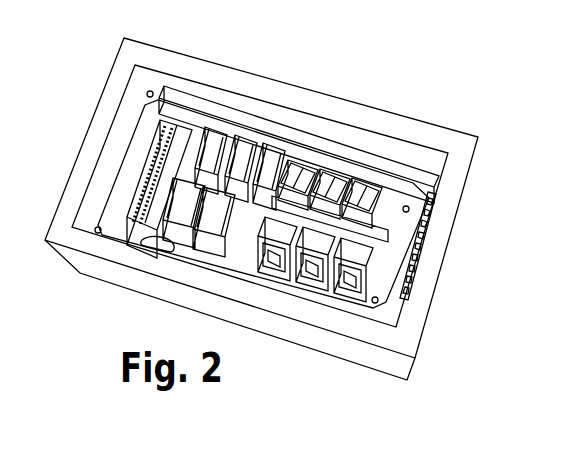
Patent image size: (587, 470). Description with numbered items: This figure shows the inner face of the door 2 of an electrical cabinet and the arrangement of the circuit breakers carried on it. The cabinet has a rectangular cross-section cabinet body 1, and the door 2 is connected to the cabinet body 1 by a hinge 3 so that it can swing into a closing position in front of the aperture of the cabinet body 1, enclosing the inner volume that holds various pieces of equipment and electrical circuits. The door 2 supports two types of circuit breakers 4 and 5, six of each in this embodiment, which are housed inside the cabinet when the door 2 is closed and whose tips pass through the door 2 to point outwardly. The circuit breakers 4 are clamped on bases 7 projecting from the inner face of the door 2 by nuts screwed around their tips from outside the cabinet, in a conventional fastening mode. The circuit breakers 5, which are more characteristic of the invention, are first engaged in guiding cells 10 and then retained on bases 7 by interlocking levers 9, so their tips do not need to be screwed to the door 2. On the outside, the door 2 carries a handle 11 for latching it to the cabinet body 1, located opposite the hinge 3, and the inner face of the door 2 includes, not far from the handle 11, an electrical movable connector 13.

The cabinet body 1 is at (393, 346).
The door 2 is at (373, 317).
The hinge 3 is at (408, 293).
The circuit breakers 4 is at (273, 157).
The circuit breakers 5 is at (367, 187).
The bases 7 is at (185, 180).
The interlocking levers 9 is at (405, 267).
The guiding cells 10 is at (347, 307).
The handle 11 is at (167, 243).
The electrical movable connector 13 is at (170, 110).